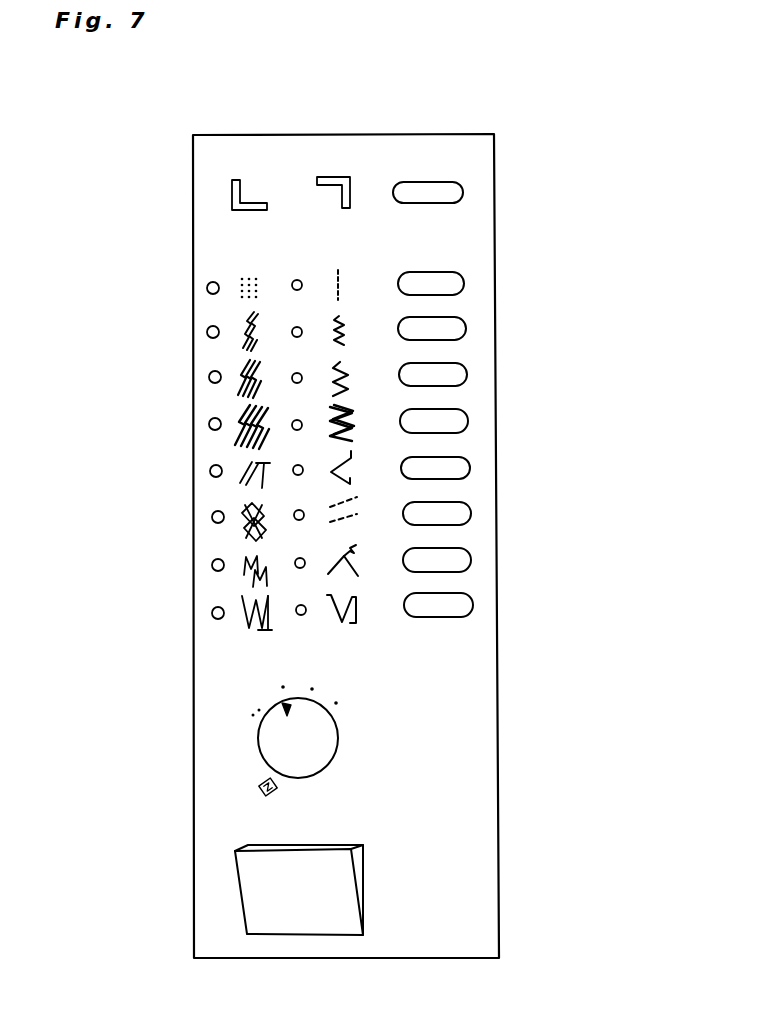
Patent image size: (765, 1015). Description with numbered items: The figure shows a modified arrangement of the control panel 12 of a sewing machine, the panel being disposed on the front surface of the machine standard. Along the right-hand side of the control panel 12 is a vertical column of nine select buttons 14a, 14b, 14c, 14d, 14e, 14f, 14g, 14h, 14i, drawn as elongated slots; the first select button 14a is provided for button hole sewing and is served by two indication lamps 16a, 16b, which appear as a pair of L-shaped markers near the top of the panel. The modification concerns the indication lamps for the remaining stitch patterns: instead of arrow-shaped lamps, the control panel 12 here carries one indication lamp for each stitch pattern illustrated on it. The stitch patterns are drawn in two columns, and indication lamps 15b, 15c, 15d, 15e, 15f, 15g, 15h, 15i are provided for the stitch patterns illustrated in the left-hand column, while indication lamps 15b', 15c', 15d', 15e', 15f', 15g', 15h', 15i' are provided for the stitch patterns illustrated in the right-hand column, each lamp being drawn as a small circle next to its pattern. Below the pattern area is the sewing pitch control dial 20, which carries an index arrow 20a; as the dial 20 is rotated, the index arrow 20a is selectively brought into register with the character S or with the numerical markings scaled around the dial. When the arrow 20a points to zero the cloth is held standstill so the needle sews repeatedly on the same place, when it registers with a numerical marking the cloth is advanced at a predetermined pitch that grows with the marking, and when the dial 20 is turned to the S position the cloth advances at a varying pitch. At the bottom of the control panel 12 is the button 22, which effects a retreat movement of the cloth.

The control panel 12 is at (494, 215).
The first select button 14a is at (460, 186).
The select button 14b is at (461, 282).
The select button 14c is at (463, 327).
The select button 14d is at (464, 372).
The select button 14e is at (466, 419).
The select button 14f is at (468, 465).
The select button 14g is at (470, 512).
The select button 14h is at (471, 558).
The select button 14i is at (473, 604).
The indication lamp 15b is at (181, 283).
The indication lamp 15c is at (181, 331).
The indication lamp 15d is at (183, 379).
The indication lamp 15e is at (187, 427).
The indication lamp 15f is at (187, 482).
The indication lamp 15g is at (185, 526).
The indication lamp 15h is at (186, 575).
The indication lamp 15i is at (188, 625).
The indication lamp 15b' is at (302, 266).
The indication lamp 15c' is at (305, 321).
The indication lamp 15d' is at (307, 369).
The indication lamp 15e' is at (310, 414).
The indication lamp 15f' is at (309, 459).
The indication lamp 15g' is at (313, 500).
The indication lamp 15h' is at (314, 550).
The indication lamp 15i' is at (313, 598).
The indication lamp 16a is at (240, 182).
The indication lamp 16b is at (344, 178).
The sewing pitch control dial 20 is at (325, 757).
The index arrow 20a is at (277, 722).
The button 22 is at (345, 892).